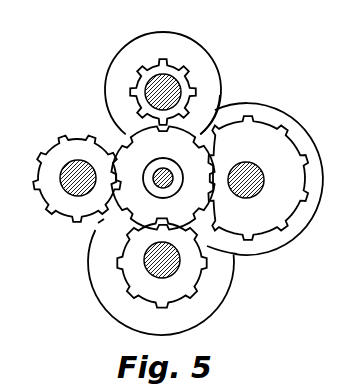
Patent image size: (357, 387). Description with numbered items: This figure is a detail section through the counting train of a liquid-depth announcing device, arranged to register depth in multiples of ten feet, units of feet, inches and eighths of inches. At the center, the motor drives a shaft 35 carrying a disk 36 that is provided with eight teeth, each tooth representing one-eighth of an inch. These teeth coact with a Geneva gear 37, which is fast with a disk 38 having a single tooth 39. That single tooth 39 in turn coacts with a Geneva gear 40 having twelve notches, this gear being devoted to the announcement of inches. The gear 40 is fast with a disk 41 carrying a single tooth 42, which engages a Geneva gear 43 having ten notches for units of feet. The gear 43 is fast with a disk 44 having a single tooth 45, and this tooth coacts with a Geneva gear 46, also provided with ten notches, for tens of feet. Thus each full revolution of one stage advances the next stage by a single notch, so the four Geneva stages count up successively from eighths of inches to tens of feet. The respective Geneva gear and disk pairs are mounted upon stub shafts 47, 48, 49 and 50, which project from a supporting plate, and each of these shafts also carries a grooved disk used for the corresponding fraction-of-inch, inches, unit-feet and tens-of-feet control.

The shaft 35 is at (165, 169).
The disk 36 is at (120, 153).
The Geneva gear 37 is at (187, 82).
The disk 38 is at (209, 79).
The single tooth 39 is at (220, 95).
The Geneva gear 40 is at (283, 147).
The disk 41 is at (318, 162).
The single tooth 42 is at (237, 255).
The Geneva gear 43 is at (193, 285).
The disk 44 is at (226, 292).
The single tooth 45 is at (98, 223).
The Geneva gear 46 is at (43, 196).
The stub shaft 47 is at (168, 82).
The stub shaft 48 is at (263, 171).
The stub shaft 49 is at (149, 269).
The stub shaft 50 is at (70, 192).